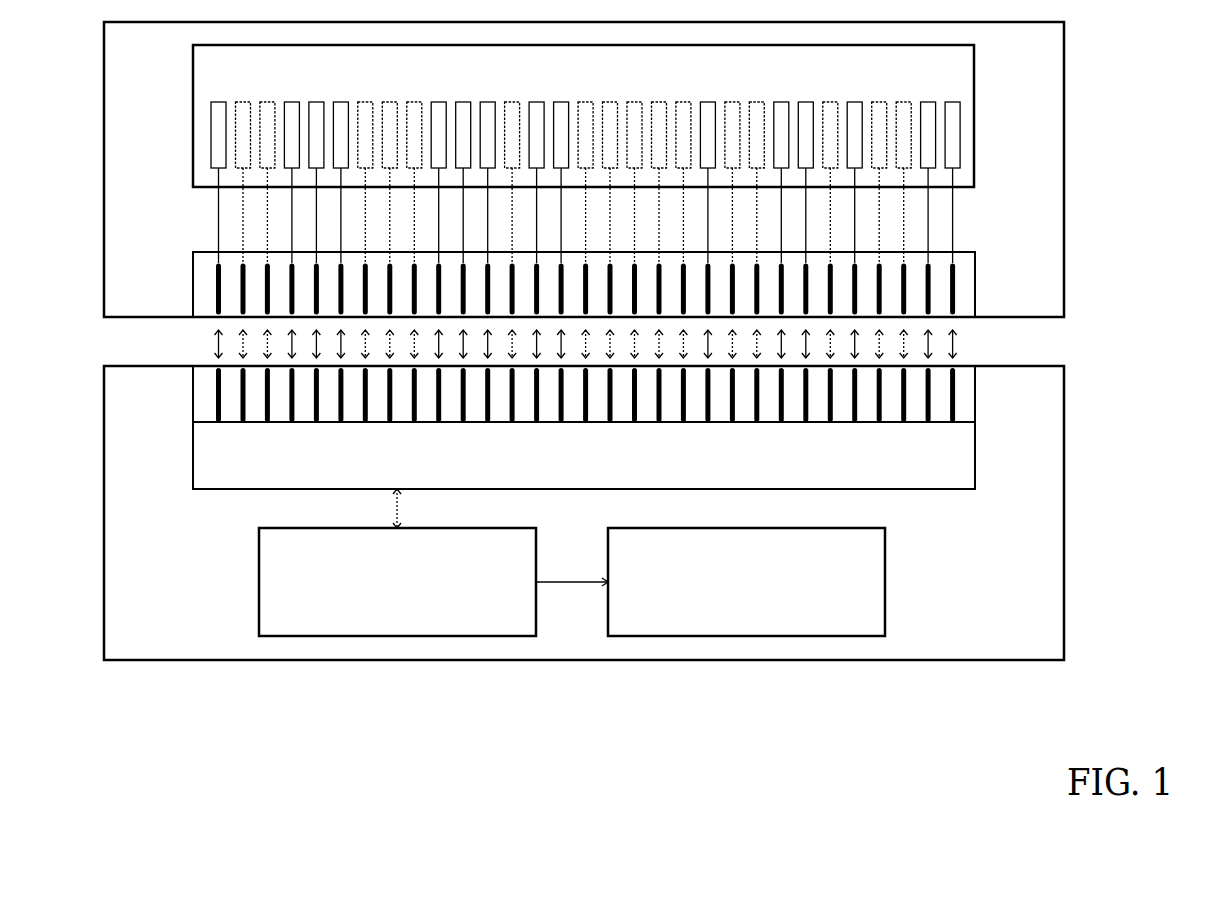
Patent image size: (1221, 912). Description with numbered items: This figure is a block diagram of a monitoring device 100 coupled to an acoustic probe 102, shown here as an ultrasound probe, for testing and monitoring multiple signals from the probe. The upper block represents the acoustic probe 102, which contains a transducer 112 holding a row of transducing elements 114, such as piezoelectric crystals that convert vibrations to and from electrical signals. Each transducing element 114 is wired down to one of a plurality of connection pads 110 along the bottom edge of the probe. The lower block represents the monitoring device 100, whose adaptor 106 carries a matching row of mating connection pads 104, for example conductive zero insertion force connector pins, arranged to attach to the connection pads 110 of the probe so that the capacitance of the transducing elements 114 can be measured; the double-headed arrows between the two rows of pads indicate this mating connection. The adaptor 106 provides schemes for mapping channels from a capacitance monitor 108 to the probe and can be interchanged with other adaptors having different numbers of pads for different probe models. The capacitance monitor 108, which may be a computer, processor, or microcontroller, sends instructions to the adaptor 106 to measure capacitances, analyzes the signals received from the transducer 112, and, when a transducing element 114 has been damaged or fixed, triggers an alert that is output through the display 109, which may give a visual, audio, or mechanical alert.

The monitoring device 100 is at (1066, 482).
The acoustic probe 102 is at (1066, 162).
The mating connection pads 104 is at (976, 398).
The adaptor 106 is at (584, 455).
The capacitance monitor 108 is at (433, 562).
The display 109 is at (746, 582).
The connection pads 110 is at (978, 290).
The transducer 112 is at (193, 147).
The transducing elements 114 is at (210, 100).